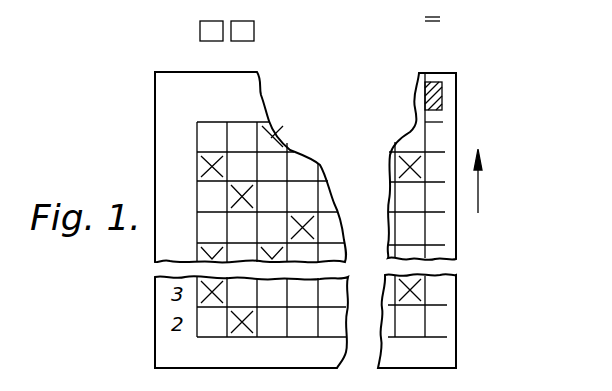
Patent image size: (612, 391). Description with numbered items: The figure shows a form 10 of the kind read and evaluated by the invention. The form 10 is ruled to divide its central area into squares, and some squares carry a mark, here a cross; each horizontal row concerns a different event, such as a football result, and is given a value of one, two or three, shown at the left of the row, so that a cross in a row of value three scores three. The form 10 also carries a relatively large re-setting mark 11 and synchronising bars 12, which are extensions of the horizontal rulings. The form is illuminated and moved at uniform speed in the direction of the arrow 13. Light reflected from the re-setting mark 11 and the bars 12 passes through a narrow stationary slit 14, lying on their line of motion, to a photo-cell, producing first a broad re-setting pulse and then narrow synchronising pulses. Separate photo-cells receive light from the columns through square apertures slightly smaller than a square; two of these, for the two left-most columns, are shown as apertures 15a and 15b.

The form 10 is at (168, 93).
The re-setting mark 11 is at (442, 100).
The synchronising marks or bars 12 is at (443, 122).
The arrow 13 is at (480, 182).
The slit 14 is at (440, 17).
The aperture 15a is at (200, 33).
The aperture 15b is at (254, 33).